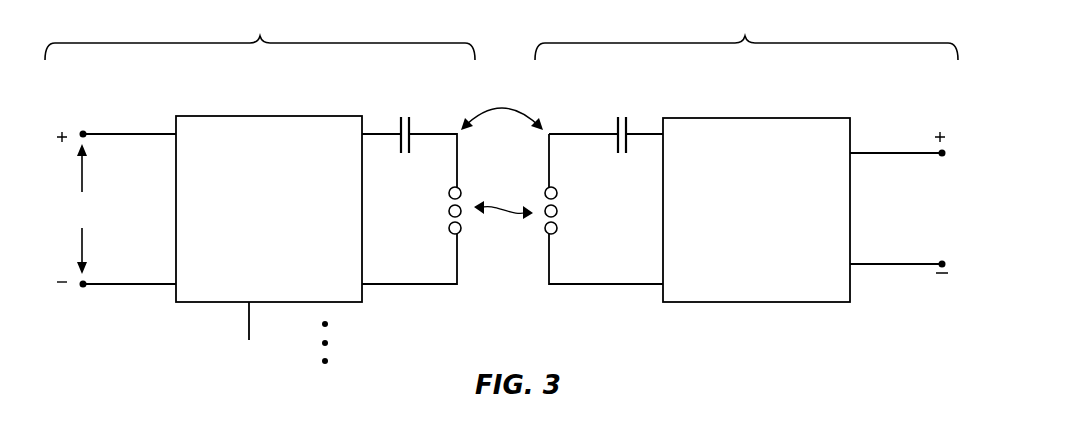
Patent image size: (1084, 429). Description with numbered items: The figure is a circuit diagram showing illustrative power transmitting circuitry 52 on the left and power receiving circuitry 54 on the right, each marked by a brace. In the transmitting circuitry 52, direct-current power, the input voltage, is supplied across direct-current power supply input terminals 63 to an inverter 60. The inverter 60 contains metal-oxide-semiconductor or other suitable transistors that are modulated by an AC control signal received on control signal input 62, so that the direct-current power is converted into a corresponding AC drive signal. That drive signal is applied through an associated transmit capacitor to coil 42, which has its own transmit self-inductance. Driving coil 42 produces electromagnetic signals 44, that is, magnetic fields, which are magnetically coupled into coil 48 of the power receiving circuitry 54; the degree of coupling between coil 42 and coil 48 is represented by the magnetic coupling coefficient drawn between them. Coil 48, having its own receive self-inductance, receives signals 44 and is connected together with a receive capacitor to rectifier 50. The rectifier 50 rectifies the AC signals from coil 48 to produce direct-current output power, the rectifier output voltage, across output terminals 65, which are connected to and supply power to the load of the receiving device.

The power transmitting circuitry 52 is at (260, 37).
The power receiving circuitry 54 is at (746, 37).
The direct-current power supply input terminals 63 is at (83, 132).
The inverter 60 is at (198, 302).
The control signal input 62 is at (249, 320).
The coil 42 is at (444, 200).
The electromagnetic signals 44 is at (502, 153).
The coil 48 is at (566, 211).
The rectifier 50 is at (714, 302).
The output terminals 65 is at (942, 160).